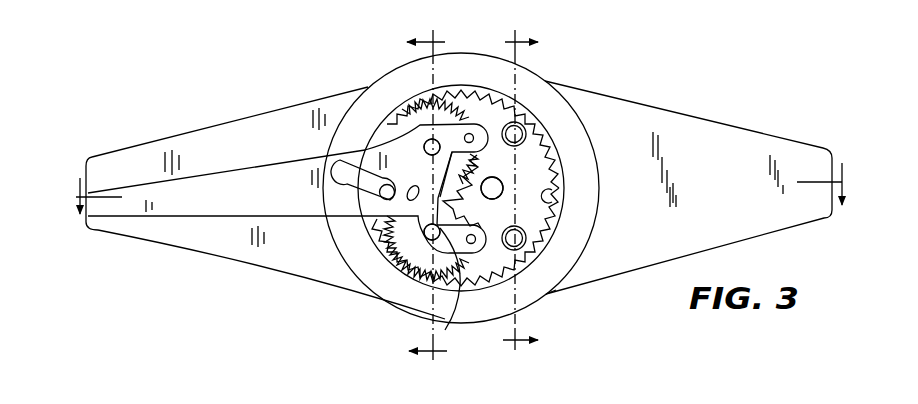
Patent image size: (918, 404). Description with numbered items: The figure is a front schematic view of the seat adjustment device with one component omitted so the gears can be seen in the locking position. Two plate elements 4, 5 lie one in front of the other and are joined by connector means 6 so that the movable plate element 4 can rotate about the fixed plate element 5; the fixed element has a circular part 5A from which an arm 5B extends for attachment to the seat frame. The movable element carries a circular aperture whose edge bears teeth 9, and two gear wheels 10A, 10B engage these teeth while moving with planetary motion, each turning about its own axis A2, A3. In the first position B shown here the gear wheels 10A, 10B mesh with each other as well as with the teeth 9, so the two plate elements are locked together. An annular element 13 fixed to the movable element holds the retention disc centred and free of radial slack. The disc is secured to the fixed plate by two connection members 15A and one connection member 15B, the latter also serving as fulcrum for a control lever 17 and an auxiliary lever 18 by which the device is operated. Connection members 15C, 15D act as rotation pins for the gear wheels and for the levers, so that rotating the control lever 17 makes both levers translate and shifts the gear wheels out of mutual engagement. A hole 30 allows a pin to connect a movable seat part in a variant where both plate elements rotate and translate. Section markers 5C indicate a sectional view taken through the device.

The plate element 4 is at (621, 108).
The plate element 5 is at (212, 130).
The connector means 6 is at (468, 186).
The teeth 9 is at (522, 211).
The annular element 13 is at (567, 260).
The control lever 17 is at (186, 204).
The auxiliary lever 18 is at (440, 220).
The hole 30 is at (491, 200).
The first position B is at (390, 151).
The gear wheel 10A is at (408, 118).
The gear wheel 10B is at (424, 231).
The connection members 15A is at (518, 122).
The connection member 15B is at (381, 198).
The connection member 15C is at (434, 140).
The connection member 15D is at (430, 242).
The axis A2 is at (430, 140).
The axis A3 is at (436, 243).
The circular part 5A is at (457, 209).
The arm 5B is at (402, 198).
The section line 5C is at (540, 191).